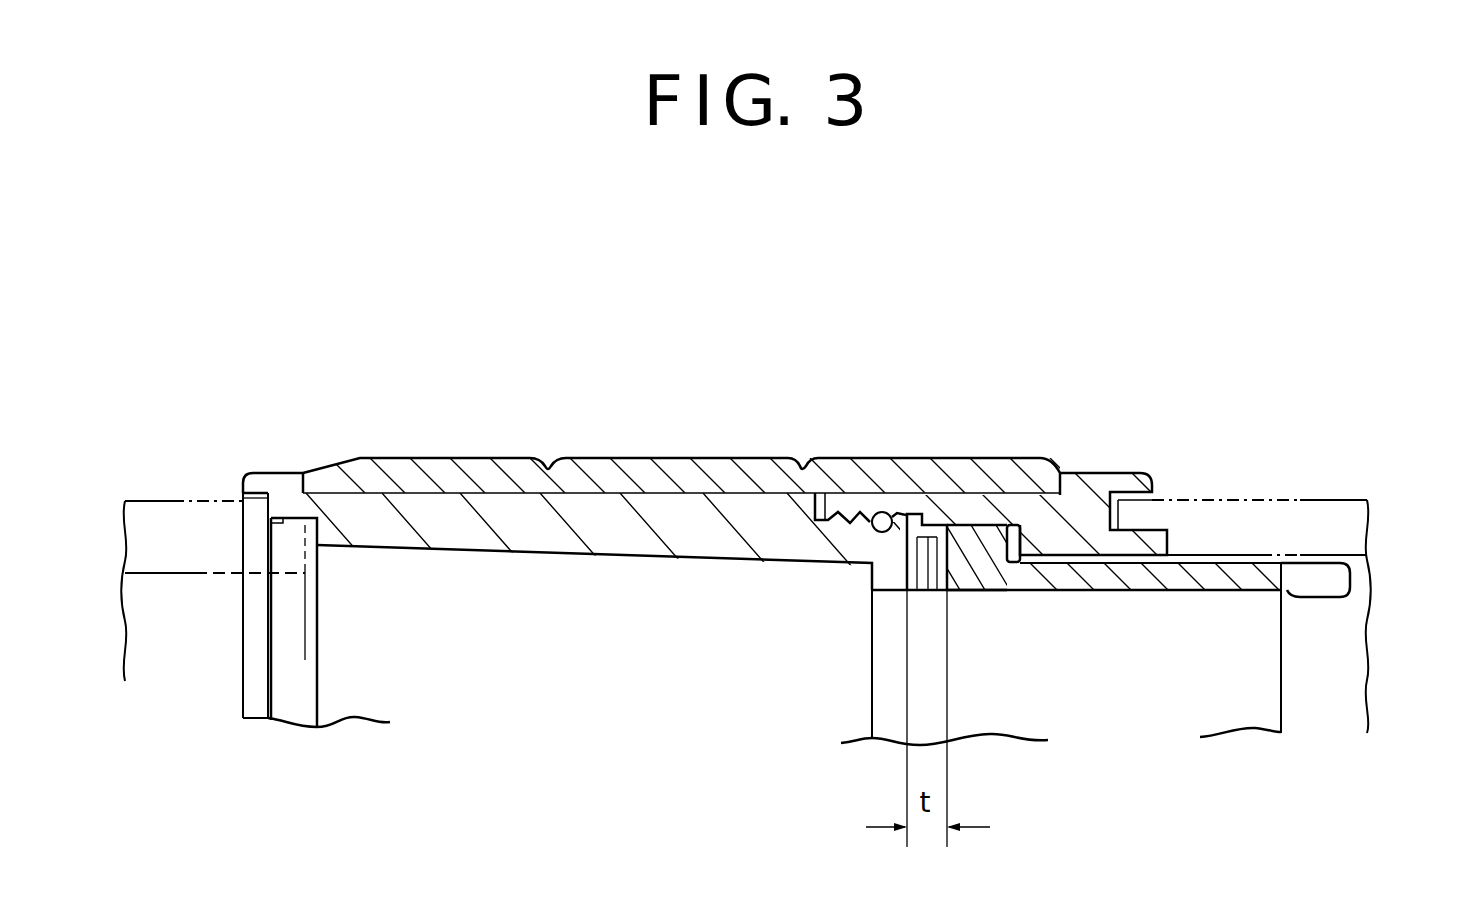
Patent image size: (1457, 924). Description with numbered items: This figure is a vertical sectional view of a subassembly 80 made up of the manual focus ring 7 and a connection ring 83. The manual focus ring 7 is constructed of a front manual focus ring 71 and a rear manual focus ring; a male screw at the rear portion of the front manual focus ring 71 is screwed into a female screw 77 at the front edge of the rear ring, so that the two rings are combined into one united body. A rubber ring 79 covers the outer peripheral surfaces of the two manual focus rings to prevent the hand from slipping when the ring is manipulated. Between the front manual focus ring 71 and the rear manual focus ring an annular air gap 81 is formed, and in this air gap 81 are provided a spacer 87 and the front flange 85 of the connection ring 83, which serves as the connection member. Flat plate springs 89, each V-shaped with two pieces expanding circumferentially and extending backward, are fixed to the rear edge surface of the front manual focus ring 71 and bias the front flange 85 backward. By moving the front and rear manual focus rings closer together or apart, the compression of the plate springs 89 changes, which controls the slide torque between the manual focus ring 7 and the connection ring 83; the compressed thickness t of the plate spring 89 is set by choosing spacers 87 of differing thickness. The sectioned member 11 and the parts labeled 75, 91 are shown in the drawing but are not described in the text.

The manual focus ring 7 is at (664, 514).
The sheet member 11 is at (172, 500).
The front manual focus ring 71 is at (455, 520).
The serrations 75 is at (852, 518).
The female screw 77 is at (893, 520).
The rubber ring 79 is at (613, 478).
The subassembly 80 is at (1035, 500).
The air gap 81 is at (1035, 562).
The connection ring 83 is at (1165, 582).
The front flange 85 is at (1020, 528).
The spacer 87 is at (1013, 523).
The plate spring 89 is at (933, 520).
The stopper 91 is at (1333, 575).